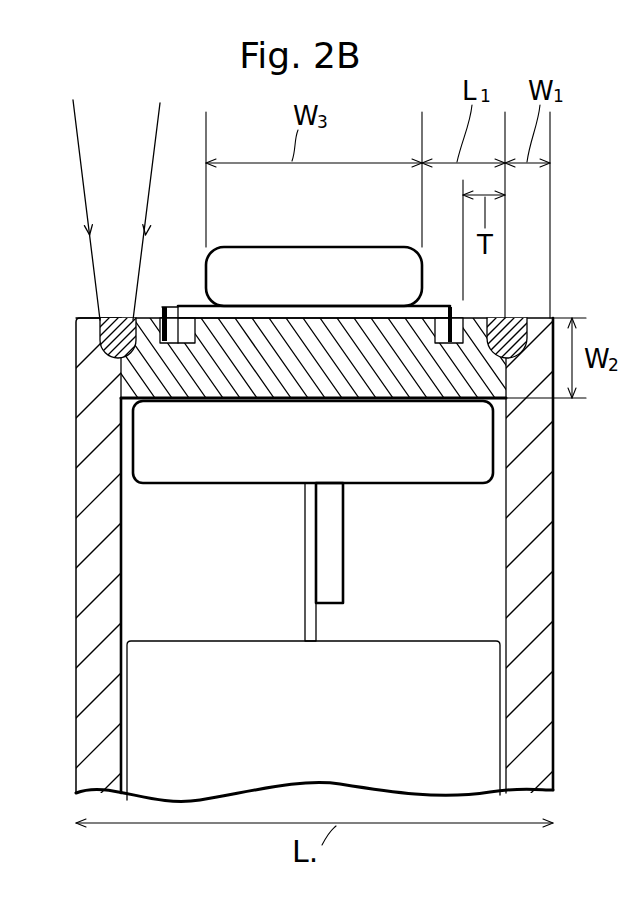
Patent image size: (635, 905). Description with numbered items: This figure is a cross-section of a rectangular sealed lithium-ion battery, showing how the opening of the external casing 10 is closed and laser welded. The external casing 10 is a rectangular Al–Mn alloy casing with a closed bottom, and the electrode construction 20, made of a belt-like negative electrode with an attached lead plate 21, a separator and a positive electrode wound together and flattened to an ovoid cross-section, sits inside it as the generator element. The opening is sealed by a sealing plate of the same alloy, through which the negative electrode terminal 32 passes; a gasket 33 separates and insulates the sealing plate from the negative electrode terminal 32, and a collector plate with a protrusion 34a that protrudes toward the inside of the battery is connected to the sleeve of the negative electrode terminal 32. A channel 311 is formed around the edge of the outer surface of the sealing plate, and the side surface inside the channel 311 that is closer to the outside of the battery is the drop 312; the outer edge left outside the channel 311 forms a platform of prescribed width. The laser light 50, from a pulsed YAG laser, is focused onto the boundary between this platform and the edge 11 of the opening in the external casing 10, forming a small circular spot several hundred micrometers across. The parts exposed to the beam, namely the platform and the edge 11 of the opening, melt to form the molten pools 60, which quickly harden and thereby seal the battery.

The external casing 10 is at (92, 533).
The edge of the opening 11 is at (92, 353).
The electrode construction 20 is at (172, 730).
The lead plate 21 is at (303, 612).
The negative electrode terminal 32 is at (318, 238).
The gasket 33 is at (458, 316).
The protrusion 34a is at (328, 562).
The laser light 50 is at (153, 160).
The molten pools 60 is at (100, 330).
The channel 311 is at (452, 307).
The drop 312 is at (163, 316).